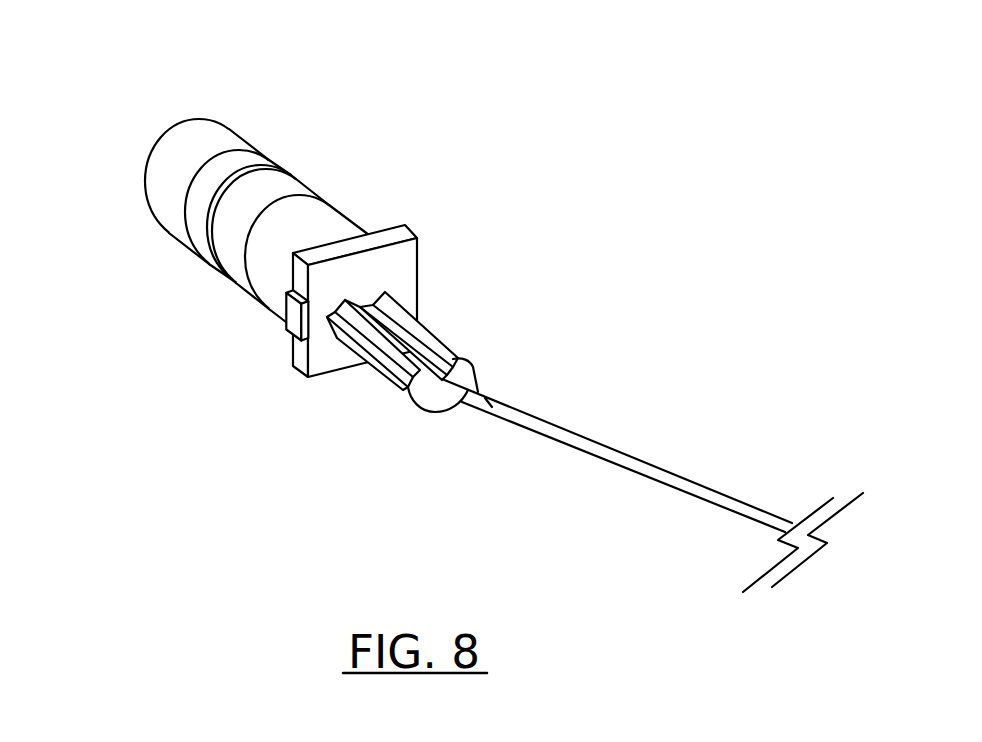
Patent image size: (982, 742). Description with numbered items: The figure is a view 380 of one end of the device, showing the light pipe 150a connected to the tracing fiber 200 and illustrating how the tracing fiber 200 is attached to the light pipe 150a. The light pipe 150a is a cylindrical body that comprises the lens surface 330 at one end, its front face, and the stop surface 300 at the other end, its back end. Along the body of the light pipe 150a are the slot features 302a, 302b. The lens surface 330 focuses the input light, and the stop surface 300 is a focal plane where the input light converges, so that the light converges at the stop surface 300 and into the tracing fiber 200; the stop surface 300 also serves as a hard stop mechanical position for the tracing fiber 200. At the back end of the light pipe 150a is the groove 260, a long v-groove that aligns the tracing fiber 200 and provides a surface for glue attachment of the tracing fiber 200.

The view 380 is at (477, 301).
The lens surface 330 is at (161, 138).
The light pipe 150a is at (214, 132).
The slot feature 302a is at (198, 243).
The slot feature 302b is at (235, 282).
The stop surface 300 is at (408, 270).
The groove 260 is at (438, 413).
The tracing fiber 200 is at (683, 477).